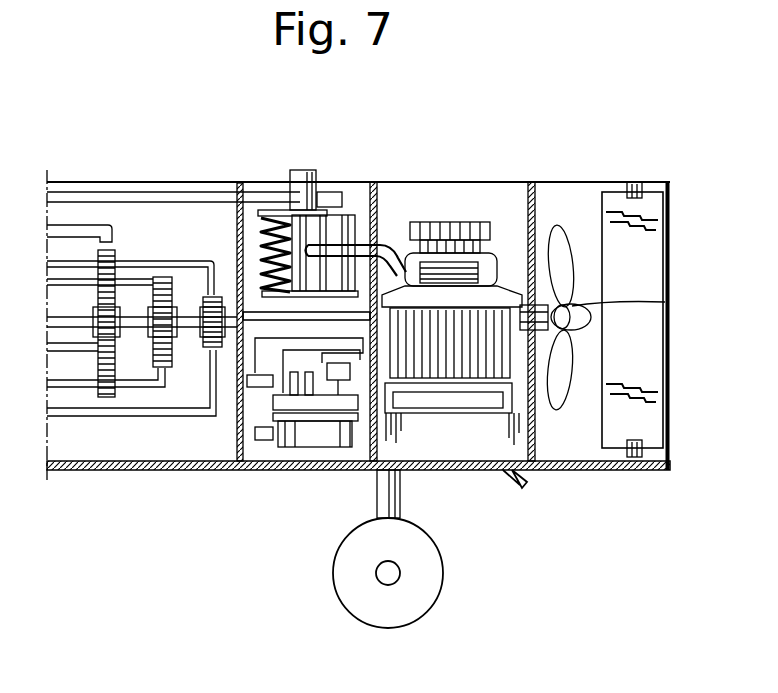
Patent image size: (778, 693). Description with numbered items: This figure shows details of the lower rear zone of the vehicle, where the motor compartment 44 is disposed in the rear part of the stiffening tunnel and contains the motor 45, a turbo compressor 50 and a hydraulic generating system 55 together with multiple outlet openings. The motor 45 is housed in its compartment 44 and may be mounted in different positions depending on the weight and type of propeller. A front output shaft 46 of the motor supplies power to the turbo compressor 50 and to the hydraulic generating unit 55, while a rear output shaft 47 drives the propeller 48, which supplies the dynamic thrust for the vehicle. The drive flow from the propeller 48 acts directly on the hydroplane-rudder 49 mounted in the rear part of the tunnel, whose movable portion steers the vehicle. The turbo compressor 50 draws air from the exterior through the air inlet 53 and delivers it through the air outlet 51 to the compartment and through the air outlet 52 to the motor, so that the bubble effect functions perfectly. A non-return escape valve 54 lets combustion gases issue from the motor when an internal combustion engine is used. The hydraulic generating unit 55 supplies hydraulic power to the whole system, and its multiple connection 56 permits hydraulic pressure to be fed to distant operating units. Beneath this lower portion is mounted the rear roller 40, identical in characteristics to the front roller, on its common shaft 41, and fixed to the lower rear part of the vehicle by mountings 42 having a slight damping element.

The rear roller 40 is at (428, 583).
The shaft of the roller 41 is at (383, 578).
The mountings for the rear roller 42 is at (390, 492).
The motor compartment 44 is at (498, 210).
The motor 45 is at (440, 298).
The front output shaft of the motor 46 is at (237, 320).
The rear output shaft of the motor 47 is at (563, 225).
The propeller 48 is at (665, 302).
The hydroplane-rudder 49 is at (645, 353).
The turbo compressor 50 is at (322, 200).
The air outlet of the turbo compressor to the compartment 51 is at (252, 200).
The air outlet from the turbo compressor to the motor 52 is at (387, 210).
The air inlet from the exterior to the turbo compressor 53 is at (297, 183).
The non-return escape valve of the motor 54 is at (520, 487).
The hydraulic generating unit 55 is at (313, 398).
The multiple connection of the hydraulic generating unit 56 is at (263, 440).